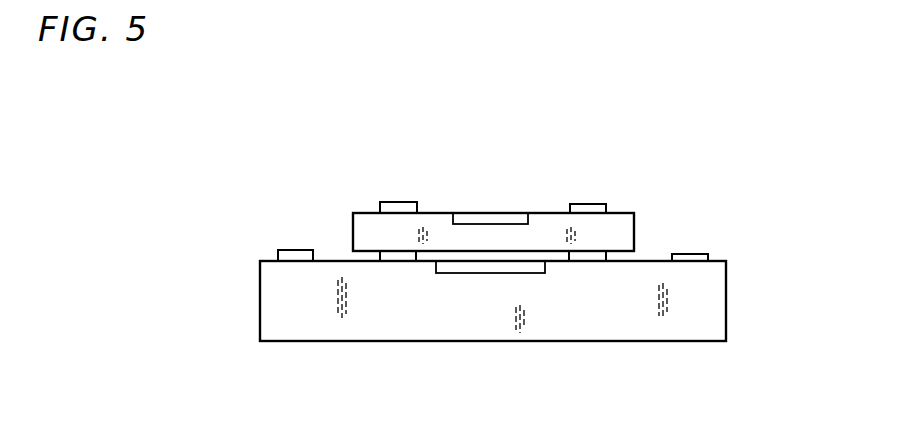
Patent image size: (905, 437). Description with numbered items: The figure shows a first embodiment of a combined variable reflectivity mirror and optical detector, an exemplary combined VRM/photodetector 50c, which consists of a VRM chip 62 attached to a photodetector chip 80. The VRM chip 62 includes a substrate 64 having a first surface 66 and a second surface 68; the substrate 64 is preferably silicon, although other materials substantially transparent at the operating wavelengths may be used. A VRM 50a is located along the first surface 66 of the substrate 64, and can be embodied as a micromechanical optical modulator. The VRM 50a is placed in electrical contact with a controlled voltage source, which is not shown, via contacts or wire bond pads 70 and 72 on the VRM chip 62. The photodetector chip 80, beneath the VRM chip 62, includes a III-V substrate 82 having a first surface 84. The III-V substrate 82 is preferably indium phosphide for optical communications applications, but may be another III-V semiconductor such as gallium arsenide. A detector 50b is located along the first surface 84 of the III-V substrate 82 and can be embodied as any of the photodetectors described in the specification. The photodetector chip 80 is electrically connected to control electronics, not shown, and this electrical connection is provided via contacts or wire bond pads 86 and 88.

The VRM 50a is at (500, 212).
The detector 50b is at (465, 270).
The combined VRM/photodetector 50c is at (318, 135).
The VRM chip 62 is at (653, 226).
The substrate 64 is at (545, 235).
The first surface 66 is at (433, 212).
The second surface 68 is at (553, 262).
The wire bond pad 70 is at (397, 203).
The wire bond pad 72 is at (590, 205).
The photodetector chip 80 is at (236, 301).
The III-V substrate 82 is at (291, 322).
The first surface 84 is at (338, 260).
The wire bond pad 86 is at (694, 253).
The wire bond pad 88 is at (293, 249).